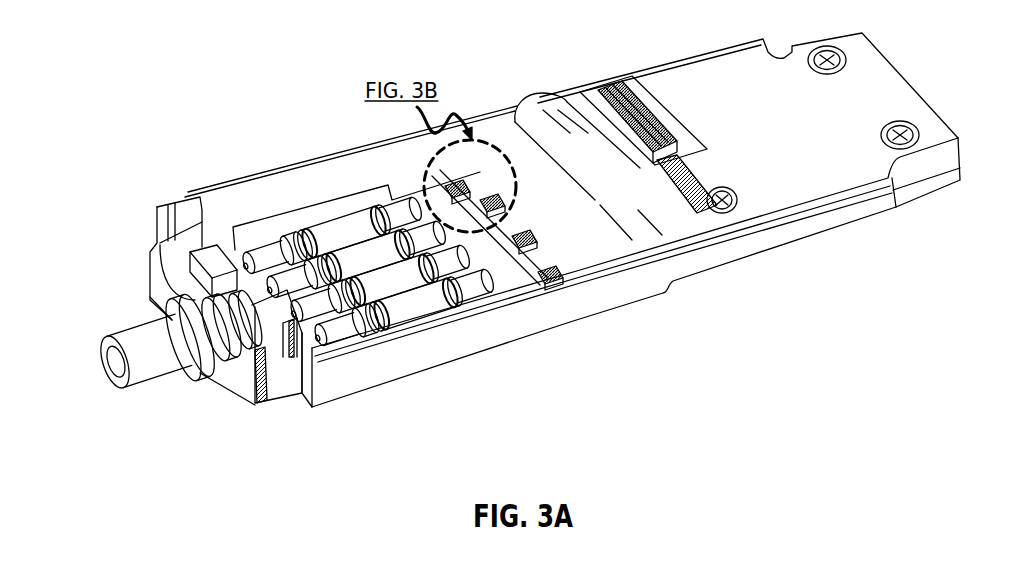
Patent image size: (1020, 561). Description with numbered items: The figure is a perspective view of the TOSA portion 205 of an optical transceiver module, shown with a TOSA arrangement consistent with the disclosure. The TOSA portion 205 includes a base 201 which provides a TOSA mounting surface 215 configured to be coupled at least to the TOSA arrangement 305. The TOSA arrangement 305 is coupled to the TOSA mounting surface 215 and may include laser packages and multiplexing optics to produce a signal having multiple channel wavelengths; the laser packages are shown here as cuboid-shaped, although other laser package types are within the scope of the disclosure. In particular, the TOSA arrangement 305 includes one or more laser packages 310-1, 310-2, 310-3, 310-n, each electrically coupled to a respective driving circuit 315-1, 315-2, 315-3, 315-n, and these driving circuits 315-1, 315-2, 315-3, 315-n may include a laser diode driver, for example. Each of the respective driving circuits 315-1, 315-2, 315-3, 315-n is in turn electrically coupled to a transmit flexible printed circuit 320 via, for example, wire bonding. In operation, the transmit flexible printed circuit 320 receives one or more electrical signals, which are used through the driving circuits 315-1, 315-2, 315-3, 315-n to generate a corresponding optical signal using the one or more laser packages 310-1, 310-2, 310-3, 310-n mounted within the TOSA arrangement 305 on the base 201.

The TOSA portion 205 is at (150, 23).
The base 201 is at (302, 405).
The TOSA mounting surface 215 is at (222, 252).
The TOSA arrangement 305 is at (301, 196).
The laser package 310-1 is at (332, 236).
The laser package 310-2 is at (356, 260).
The laser package 310-3 is at (380, 284).
The laser package 310-n is at (404, 308).
The driving circuit 315-1 is at (445, 178).
The driving circuit 315-2 is at (490, 189).
The driving circuit 315-3 is at (524, 228).
The driving circuit 315-n is at (546, 282).
The transmit flexible printed circuit 320 is at (536, 108).